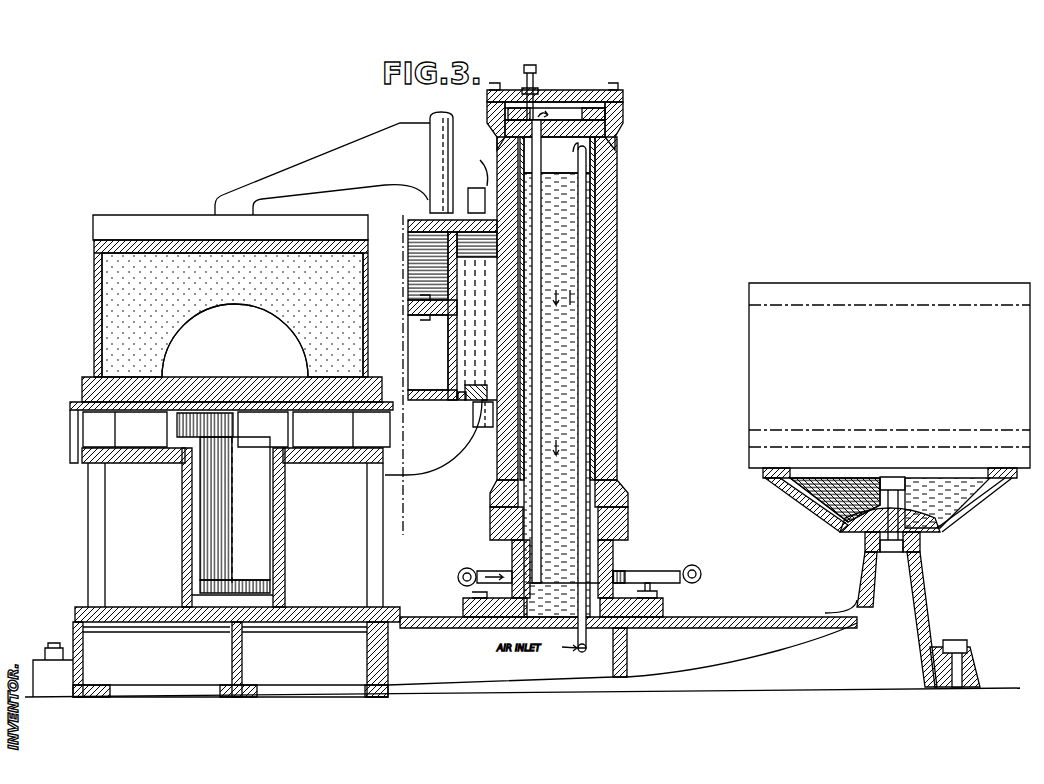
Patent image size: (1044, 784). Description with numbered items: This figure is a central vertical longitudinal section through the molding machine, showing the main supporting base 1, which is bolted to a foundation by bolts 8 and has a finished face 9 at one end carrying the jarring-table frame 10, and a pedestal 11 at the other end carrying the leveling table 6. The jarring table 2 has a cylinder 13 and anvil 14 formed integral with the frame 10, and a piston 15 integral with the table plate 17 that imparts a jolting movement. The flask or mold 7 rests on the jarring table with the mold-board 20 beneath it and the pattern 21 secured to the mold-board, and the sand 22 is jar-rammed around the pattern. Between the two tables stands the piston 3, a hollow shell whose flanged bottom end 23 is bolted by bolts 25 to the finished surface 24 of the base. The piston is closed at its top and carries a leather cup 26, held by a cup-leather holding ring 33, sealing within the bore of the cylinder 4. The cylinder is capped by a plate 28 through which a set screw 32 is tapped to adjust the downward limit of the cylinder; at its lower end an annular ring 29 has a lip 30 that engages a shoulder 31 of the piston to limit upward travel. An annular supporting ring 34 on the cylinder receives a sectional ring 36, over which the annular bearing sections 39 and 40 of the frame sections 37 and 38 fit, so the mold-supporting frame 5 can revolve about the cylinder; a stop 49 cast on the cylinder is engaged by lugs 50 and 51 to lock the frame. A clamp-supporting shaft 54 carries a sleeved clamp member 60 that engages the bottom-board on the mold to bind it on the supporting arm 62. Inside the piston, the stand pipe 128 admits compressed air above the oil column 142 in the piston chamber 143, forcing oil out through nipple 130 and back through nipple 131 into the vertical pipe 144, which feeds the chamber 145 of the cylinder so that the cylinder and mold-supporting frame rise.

The main supporting base 1 is at (700, 690).
The jarring table 2 is at (46, 432).
The piston 3 is at (560, 342).
The cylinder 4 is at (563, 342).
The mold-supporting and carrying frame 5 is at (469, 460).
The leveling table 6 is at (990, 498).
The flask or mold 7 is at (413, 219).
The bolts 8 is at (53, 643).
The finished face 9 is at (372, 632).
The jarring-table frame 10 is at (88, 527).
The pedestal 11 is at (922, 565).
The cylinder 13 is at (182, 511).
The anvil 14 is at (165, 465).
The piston 15 is at (272, 514).
The table plate 17 is at (70, 408).
The mold-board 20 is at (82, 384).
The pattern 21 is at (235, 340).
The sand 22 is at (118, 277).
The flanged bottom end 23 is at (663, 608).
The finished surface 24 is at (640, 617).
The bolts 25 is at (657, 594).
The leather cup 26 is at (623, 110).
The plate 28 is at (560, 102).
The annular ring 29 is at (490, 519).
The lip 30 is at (628, 500).
The shoulder 31 is at (617, 275).
The set screw 32 is at (534, 64).
The cup-leather holding ring 33 is at (597, 105).
The annular supporting ring 34 is at (482, 415).
The sectional ring 36 is at (473, 412).
The frame section 37 is at (408, 392).
The frame section 38 is at (408, 240).
The annular bearing section 39 is at (458, 400).
The annular bearing section 40 is at (474, 193).
The stop 49 is at (477, 164).
The lug 50 is at (478, 418).
The lug 51 is at (478, 202).
The clamp-supporting shaft 54 is at (443, 112).
The sleeved clamp member 60 is at (332, 155).
The supporting arm 62 is at (420, 470).
The stand pipe 128 is at (586, 152).
The nipple 130 is at (637, 570).
The nipple 131 is at (490, 570).
The oil column 142 is at (605, 170).
The piston chamber 143 is at (597, 333).
The vertical pipe 144 is at (541, 300).
The chamber 145 is at (559, 81).